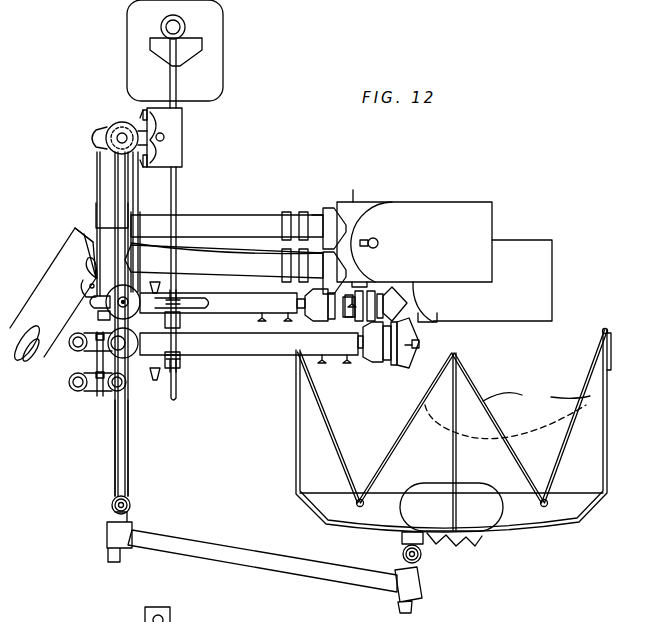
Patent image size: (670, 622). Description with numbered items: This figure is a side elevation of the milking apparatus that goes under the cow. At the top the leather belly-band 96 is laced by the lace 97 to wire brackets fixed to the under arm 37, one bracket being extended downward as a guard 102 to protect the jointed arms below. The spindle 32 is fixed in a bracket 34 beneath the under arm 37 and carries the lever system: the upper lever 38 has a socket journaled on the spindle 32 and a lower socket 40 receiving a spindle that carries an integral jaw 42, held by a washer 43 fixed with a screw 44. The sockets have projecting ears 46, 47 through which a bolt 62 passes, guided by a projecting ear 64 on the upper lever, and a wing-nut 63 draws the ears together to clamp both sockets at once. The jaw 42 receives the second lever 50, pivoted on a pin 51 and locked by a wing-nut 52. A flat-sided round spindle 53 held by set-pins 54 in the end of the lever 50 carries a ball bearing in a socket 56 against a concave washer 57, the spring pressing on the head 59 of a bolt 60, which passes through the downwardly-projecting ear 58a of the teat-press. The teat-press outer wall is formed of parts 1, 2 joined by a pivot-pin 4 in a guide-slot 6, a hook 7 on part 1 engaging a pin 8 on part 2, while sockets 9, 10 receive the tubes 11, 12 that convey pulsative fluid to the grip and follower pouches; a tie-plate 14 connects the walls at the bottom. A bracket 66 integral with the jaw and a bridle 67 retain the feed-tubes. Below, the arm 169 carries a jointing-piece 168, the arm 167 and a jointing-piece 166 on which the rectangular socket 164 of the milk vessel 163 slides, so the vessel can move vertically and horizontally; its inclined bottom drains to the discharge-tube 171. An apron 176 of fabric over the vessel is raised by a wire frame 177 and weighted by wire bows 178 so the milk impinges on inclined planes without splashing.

The part of outer wall 1 is at (458, 210).
The part of outer wall 2 is at (353, 202).
The pivot-pin 4 is at (380, 243).
The guide-slot 6 is at (366, 240).
The hook 7 is at (339, 228).
The pin 8 is at (340, 273).
The socket 9 is at (330, 216).
The socket 10 is at (319, 265).
The tube 11 is at (250, 216).
The tube 12 is at (245, 268).
The tie-plate 14 is at (368, 281).
The spindle 32 is at (118, 122).
The bracket 34 is at (147, 166).
The under arm 37 is at (182, 115).
The upper lever 38 is at (130, 230).
The socket 40 is at (137, 338).
The jaw 42 is at (160, 374).
The washer 43 is at (108, 303).
The screw 44 is at (77, 325).
The ear 46 is at (96, 137).
The ear 47 is at (108, 318).
The second lever 50 is at (250, 314).
The pin 51 is at (180, 280).
The wing-nut 52 is at (181, 320).
The round spindle 53 is at (360, 372).
The set-pins 54 is at (337, 364).
The socket 56 is at (363, 363).
The concave washer 57 is at (384, 302).
The downwardly-projecting ear 58a is at (414, 372).
The head of bolt 59 is at (425, 352).
The bolt 60 is at (304, 304).
The bolt 62 is at (97, 172).
The wing-nut 63 is at (76, 349).
The projecting ear 64 is at (95, 222).
The bracket 66 is at (88, 278).
The bridle 67 is at (82, 235).
The belly-band 96 is at (222, 34).
The lace 97 is at (172, 46).
The guard 102 is at (177, 180).
The vessel 163 is at (296, 466).
The rectangular socket 164 is at (402, 539).
The jointing-piece 166 is at (422, 576).
The arm 167 is at (280, 570).
The jointing-piece 168 is at (107, 532).
The arm 169 is at (129, 452).
The discharge-tube 171 is at (477, 536).
The apron 176 is at (300, 380).
The wire frame 177 is at (457, 455).
The wire bow 178 is at (360, 498).